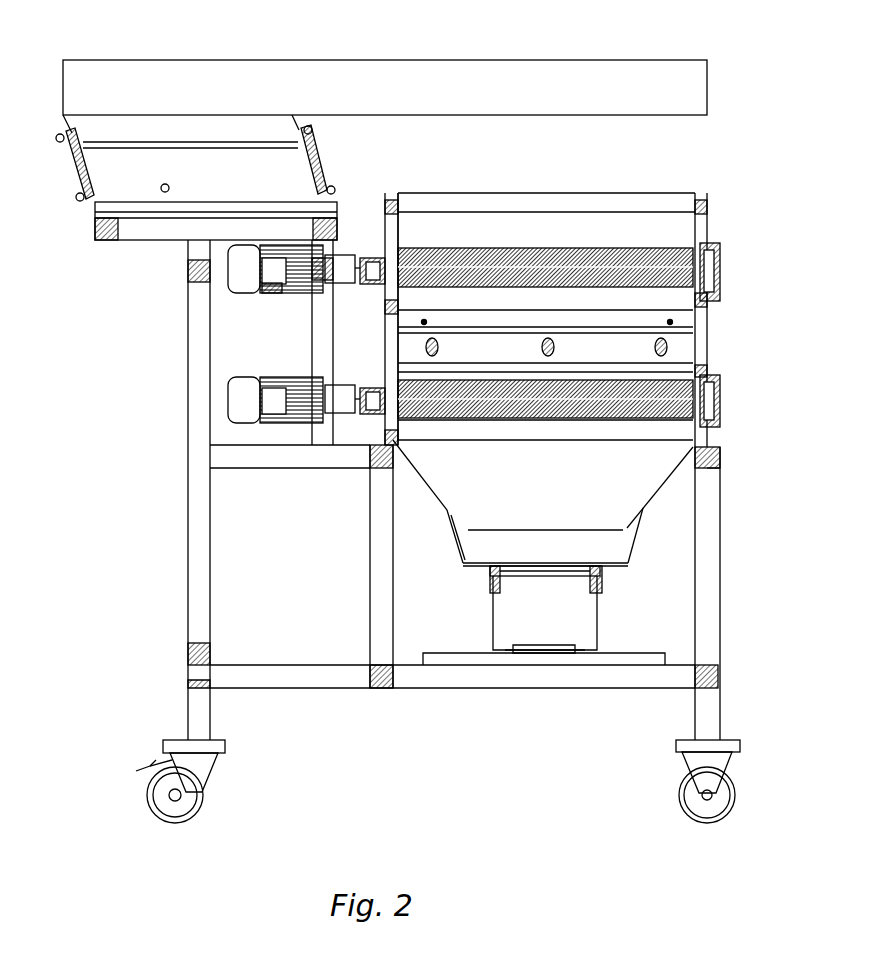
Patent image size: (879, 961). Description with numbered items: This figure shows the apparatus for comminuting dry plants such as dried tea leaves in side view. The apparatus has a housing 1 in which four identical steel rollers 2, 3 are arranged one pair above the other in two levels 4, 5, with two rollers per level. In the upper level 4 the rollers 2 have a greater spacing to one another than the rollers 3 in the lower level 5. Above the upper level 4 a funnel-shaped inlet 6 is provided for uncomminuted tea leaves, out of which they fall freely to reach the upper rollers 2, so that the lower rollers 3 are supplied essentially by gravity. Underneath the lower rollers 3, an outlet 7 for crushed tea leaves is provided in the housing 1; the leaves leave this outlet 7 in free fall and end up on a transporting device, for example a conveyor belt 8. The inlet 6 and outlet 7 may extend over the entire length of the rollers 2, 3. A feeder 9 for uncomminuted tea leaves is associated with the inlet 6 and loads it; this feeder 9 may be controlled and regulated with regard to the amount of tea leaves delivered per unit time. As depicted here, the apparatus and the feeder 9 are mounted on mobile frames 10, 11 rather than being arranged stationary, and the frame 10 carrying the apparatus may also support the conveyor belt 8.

The housing 1 is at (748, 205).
The roller 2 is at (636, 252).
The roller 3 is at (592, 425).
The upper level 4 is at (735, 240).
The lower level 5 is at (742, 366).
The funnel-shaped inlet 6 is at (664, 192).
The outlet 7 is at (652, 492).
The conveyor belt 8 is at (631, 563).
The feeder 9 is at (404, 48).
The mobile frame 10 is at (723, 522).
The mobile frame 11 is at (160, 445).